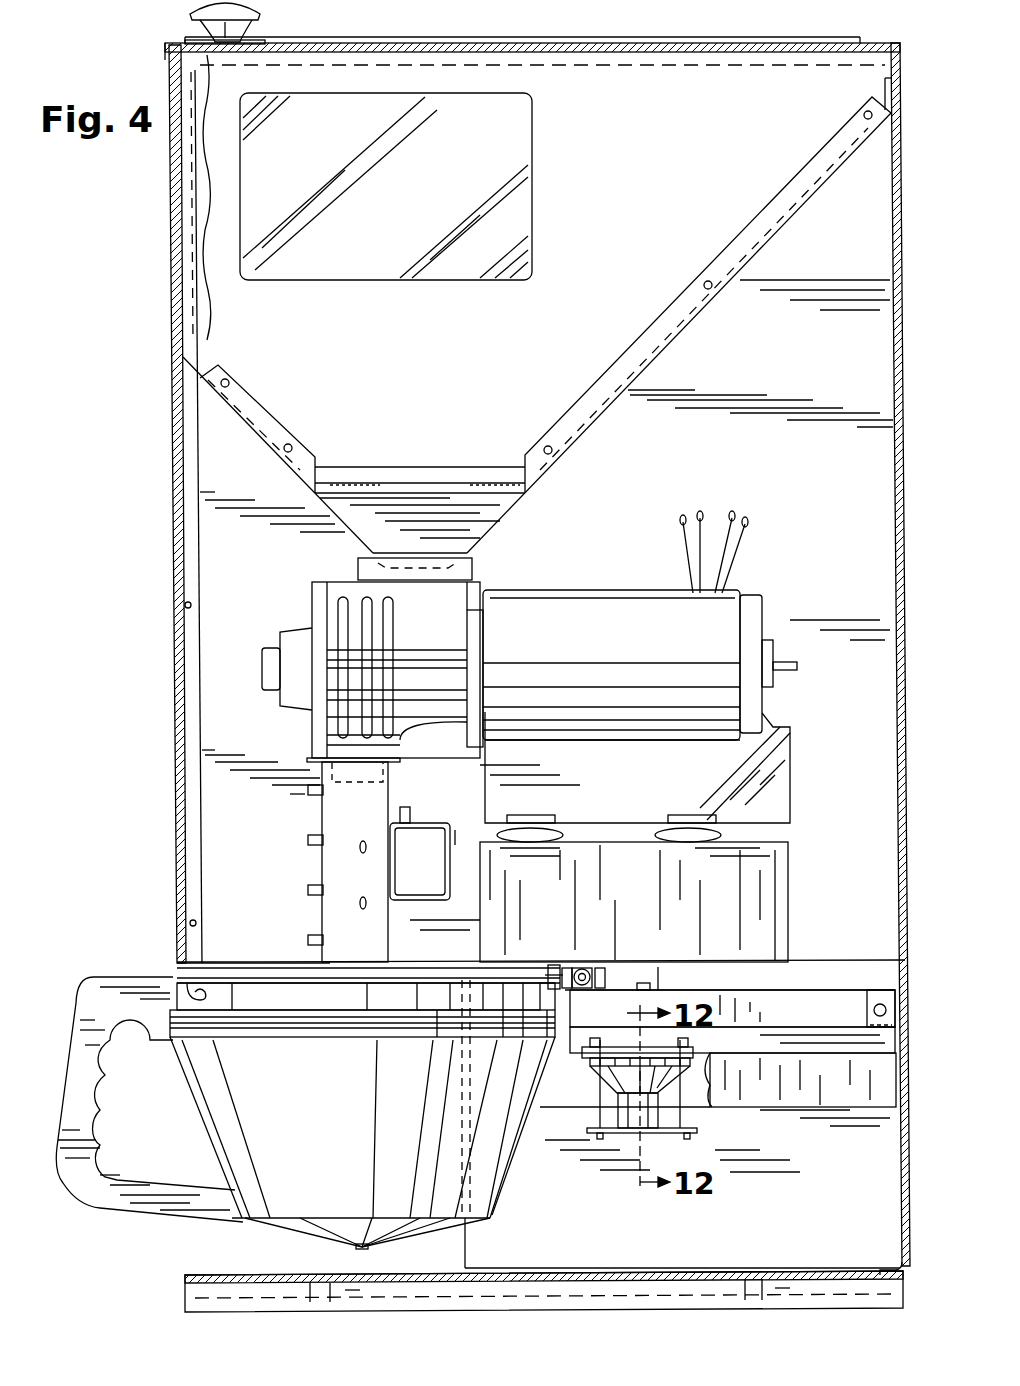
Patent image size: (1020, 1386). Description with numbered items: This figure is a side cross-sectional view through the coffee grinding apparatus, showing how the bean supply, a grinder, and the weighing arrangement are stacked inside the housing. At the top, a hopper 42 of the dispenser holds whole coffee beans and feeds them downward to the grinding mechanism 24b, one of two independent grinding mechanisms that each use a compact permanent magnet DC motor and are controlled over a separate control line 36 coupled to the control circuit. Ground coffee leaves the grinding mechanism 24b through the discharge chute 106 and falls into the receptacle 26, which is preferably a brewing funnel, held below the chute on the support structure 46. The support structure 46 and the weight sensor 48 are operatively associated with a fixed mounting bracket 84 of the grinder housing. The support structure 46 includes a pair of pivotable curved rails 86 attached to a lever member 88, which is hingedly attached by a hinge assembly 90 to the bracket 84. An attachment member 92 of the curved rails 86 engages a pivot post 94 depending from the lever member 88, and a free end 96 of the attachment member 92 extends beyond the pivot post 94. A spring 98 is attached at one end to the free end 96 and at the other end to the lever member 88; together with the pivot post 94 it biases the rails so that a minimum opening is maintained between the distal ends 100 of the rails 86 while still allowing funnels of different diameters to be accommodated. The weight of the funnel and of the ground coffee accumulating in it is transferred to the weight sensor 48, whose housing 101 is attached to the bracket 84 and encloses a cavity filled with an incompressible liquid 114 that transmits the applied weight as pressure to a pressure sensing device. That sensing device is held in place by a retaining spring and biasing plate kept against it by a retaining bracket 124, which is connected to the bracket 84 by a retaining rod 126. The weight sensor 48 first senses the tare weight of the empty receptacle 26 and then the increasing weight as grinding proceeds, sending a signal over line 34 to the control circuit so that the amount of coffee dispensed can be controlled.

The hopper 42 is at (232, 268).
The grinding mechanism 24b is at (633, 510).
The control line 36 is at (748, 559).
The discharge chute 106 is at (322, 878).
The support structure 46 is at (290, 955).
The curved rails 86 is at (250, 978).
The distal ends 100 is at (173, 977).
The attachment member 92 is at (553, 967).
The pivot post 94 is at (582, 969).
The spring 98 is at (575, 975).
The free end 96 is at (600, 977).
The lever member 88 is at (800, 1000).
The hinge assembly 90 is at (866, 978).
The mounting bracket 84 is at (875, 1097).
The weight sensor 48 is at (720, 1115).
The liquid 114 is at (598, 1062).
The housing 101 is at (607, 1095).
The line 34 is at (613, 1133).
The retaining bracket 124 is at (697, 1120).
The retaining rod 126 is at (700, 1120).
The receptacle 26 is at (300, 1207).